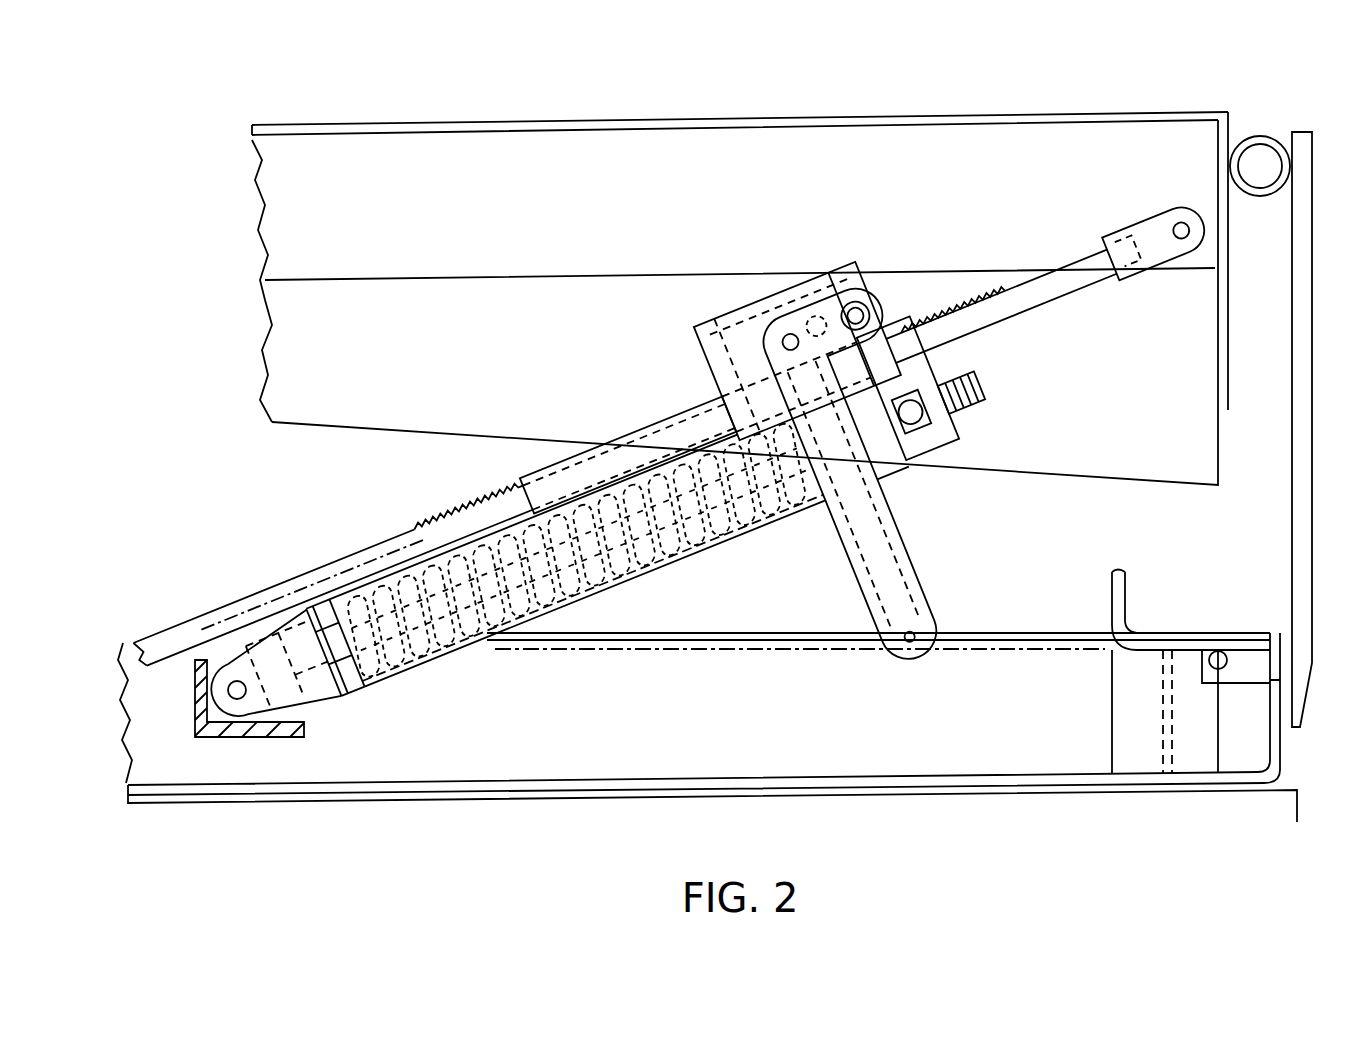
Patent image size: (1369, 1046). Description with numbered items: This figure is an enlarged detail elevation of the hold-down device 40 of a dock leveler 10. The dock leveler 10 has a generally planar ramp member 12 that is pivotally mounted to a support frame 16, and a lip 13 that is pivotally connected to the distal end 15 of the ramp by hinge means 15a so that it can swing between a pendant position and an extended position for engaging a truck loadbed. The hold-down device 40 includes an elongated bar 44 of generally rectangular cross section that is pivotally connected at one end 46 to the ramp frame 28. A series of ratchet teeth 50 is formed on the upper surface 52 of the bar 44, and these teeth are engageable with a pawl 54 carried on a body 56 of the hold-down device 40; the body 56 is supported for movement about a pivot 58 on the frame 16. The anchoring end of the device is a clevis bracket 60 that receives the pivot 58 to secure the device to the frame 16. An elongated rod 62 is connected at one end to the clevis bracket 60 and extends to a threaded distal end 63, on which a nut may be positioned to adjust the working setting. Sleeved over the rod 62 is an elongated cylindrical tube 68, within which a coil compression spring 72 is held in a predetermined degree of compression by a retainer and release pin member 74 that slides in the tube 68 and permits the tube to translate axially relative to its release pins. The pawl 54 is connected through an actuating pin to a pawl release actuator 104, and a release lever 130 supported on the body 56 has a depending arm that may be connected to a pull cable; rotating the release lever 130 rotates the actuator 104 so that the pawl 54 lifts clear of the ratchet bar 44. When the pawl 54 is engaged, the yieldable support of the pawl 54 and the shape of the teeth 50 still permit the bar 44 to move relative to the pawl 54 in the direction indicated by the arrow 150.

The dock leveler 10 is at (1006, 88).
The ramp member 12 is at (700, 118).
The lip 13 is at (1313, 330).
The distal end 15 is at (1232, 246).
The hinge means 15a is at (1259, 152).
The support frame 16 is at (957, 632).
The ramp frame 28 is at (542, 165).
The hold-down device 40 is at (498, 430).
The elongated bar 44 is at (1042, 295).
The one end 46 is at (1135, 222).
The ratchet teeth 50 is at (455, 512).
The upper surface 52 is at (283, 585).
The pawl 54 is at (696, 350).
The body 56 is at (696, 380).
The pivot 58 is at (236, 700).
The clevis bracket 60 is at (318, 705).
The elongated rod 62 is at (462, 650).
The threaded distal end 63 is at (962, 372).
The cylindrical tube 68 is at (612, 592).
The coil compression spring 72 is at (412, 660).
The retainer and release pin member 74 is at (955, 407).
The pawl release actuator 104 is at (904, 448).
The release lever 130 is at (826, 541).
The arrow 150 is at (227, 621).